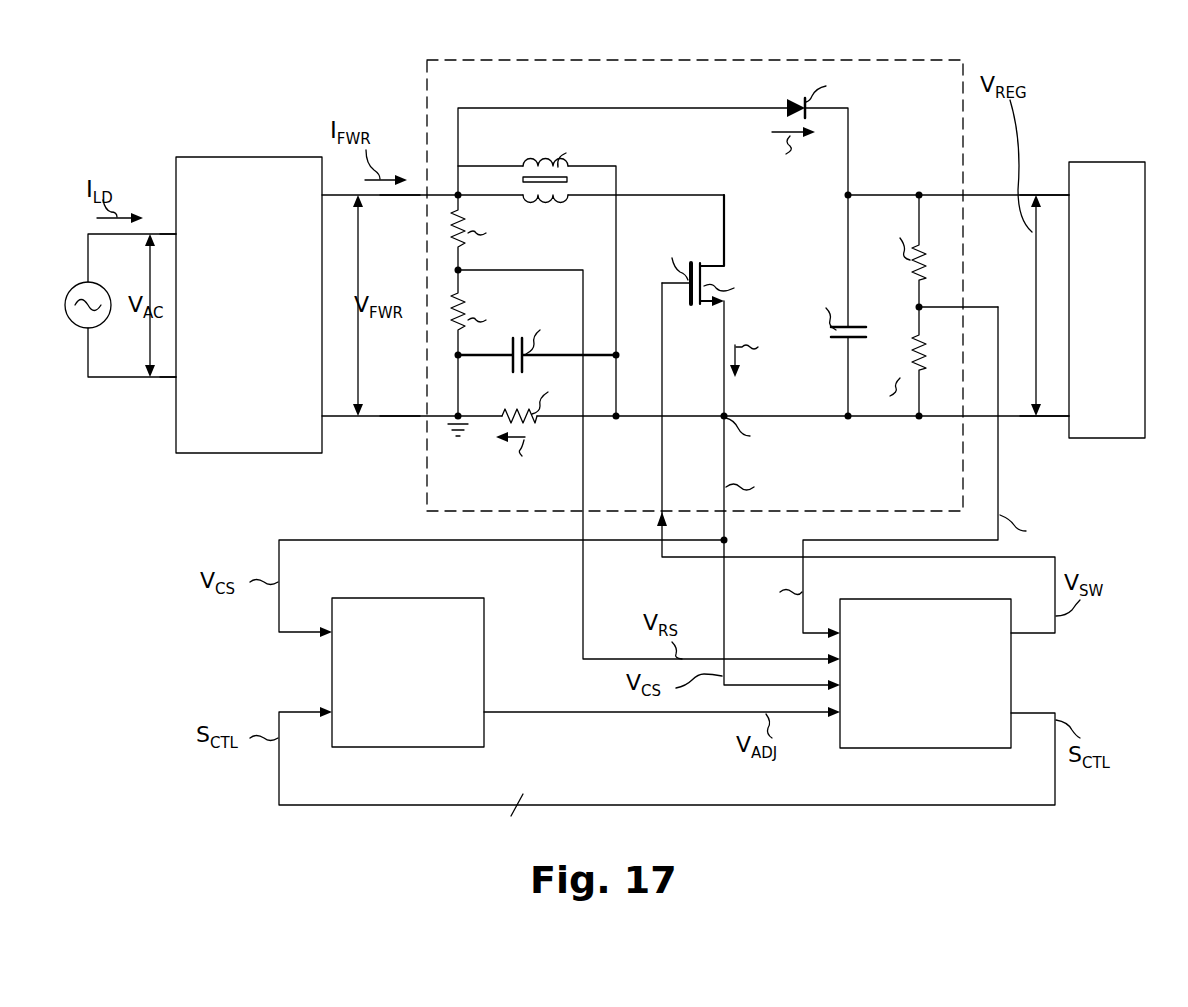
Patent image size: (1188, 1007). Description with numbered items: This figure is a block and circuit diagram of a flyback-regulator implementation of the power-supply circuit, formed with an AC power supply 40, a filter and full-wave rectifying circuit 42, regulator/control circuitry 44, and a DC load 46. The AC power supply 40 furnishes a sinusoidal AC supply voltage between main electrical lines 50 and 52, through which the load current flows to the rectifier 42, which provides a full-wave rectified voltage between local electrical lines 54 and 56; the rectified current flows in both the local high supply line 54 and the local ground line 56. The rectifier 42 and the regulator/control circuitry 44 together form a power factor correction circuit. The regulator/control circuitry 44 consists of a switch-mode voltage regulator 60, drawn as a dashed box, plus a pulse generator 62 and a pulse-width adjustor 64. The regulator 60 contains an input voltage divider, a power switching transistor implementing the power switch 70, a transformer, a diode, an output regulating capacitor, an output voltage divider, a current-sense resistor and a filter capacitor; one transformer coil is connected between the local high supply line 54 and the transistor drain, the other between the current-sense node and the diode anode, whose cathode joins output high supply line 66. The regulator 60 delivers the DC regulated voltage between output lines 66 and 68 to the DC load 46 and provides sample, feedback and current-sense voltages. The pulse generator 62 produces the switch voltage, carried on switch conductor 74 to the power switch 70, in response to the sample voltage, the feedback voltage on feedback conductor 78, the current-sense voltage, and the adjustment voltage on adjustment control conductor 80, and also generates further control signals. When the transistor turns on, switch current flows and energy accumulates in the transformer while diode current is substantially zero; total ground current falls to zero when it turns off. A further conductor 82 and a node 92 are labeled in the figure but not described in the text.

The AC power supply 40 is at (80, 325).
The filter and full-wave rectifying circuit 42 is at (212, 454).
The regulator/control circuitry 44 is at (560, 588).
The DC load 46 is at (1105, 162).
The main electrical line 50 is at (167, 232).
The main electrical line 52 is at (164, 379).
The local electrical line 54 is at (402, 198).
The local electrical line 56 is at (400, 419).
The switch-mode voltage regulator 60 is at (740, 60).
The pulse generator 62 is at (1012, 672).
The pulse-width adjustor 64 is at (332, 668).
The output electrical line 66 is at (1025, 194).
The output electrical line 68 is at (1053, 418).
The power switch 70 is at (711, 324).
The primary control switch electrical conductor 74 is at (660, 458).
The feedback electrical conductor 78 is at (802, 626).
The adjustment control electrical conductor 80 is at (540, 714).
The control signal line 82 is at (650, 805).
The feedback node 92 is at (908, 292).